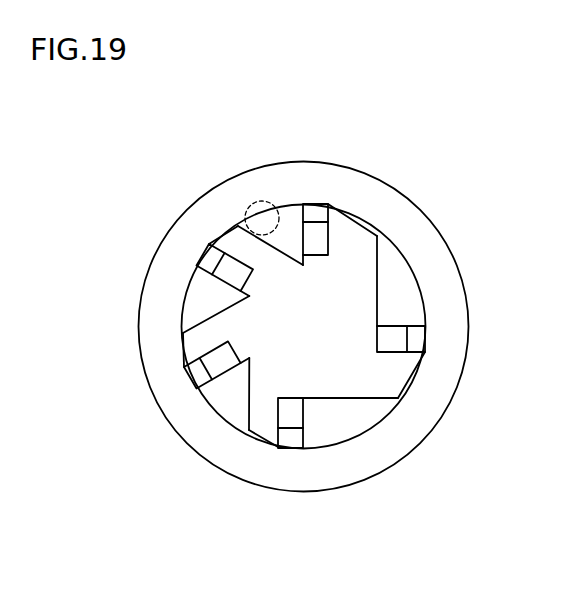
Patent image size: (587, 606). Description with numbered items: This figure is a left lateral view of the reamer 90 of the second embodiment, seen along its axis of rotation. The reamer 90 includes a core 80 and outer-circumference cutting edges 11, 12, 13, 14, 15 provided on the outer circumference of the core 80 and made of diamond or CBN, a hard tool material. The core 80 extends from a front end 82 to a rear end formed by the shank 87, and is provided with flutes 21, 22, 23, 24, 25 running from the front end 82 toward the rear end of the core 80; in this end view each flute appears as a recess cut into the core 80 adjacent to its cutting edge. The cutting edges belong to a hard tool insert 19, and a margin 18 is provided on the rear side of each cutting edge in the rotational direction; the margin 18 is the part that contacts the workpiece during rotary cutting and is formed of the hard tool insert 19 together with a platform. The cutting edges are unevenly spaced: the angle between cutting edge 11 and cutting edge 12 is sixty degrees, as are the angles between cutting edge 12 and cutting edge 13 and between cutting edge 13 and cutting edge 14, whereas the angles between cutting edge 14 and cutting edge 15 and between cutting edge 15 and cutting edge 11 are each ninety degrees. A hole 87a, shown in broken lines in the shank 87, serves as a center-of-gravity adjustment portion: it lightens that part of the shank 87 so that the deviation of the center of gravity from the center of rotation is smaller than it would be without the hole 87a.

The outer-circumference cutting edge 11 is at (307, 173).
The outer-circumference cutting edge 12 is at (168, 279).
The outer-circumference cutting edge 13 is at (179, 415).
The outer-circumference cutting edge 14 is at (323, 485).
The outer-circumference cutting edge 15 is at (448, 282).
The margin 18 is at (316, 203).
The hard tool insert 19 is at (321, 203).
The flute 21 is at (286, 208).
The flute 22 is at (233, 298).
The flute 23 is at (222, 400).
The flute 24 is at (313, 410).
The flute 25 is at (390, 320).
The core 80 is at (340, 365).
The front end 82 is at (397, 372).
The shank 87 is at (393, 183).
The hole 87a is at (250, 205).
The reamer 90 is at (468, 132).